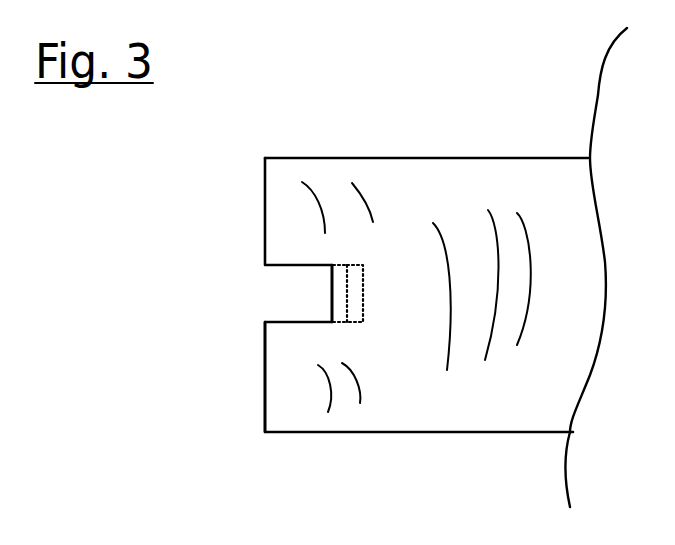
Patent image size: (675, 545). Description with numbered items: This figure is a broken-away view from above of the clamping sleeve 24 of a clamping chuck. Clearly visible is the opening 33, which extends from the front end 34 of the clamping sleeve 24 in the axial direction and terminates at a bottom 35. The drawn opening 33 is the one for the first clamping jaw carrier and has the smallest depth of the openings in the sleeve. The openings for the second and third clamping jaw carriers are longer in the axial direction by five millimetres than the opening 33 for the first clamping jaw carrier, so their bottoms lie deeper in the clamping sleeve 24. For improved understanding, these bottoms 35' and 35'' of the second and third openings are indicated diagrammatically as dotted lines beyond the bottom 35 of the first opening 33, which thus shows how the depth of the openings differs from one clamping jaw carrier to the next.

The clamping sleeve 24 is at (490, 392).
The opening 33 is at (282, 292).
The front end 34 is at (252, 382).
The bottom 35 is at (320, 178).
The bottom of second opening 35' is at (375, 178).
The bottom of third opening 35'' is at (414, 178).